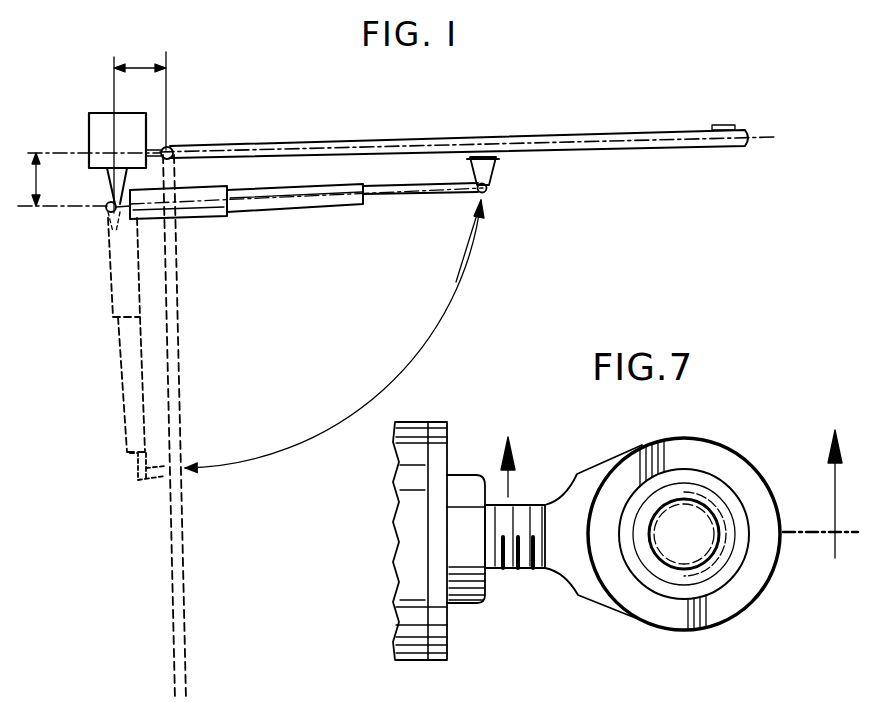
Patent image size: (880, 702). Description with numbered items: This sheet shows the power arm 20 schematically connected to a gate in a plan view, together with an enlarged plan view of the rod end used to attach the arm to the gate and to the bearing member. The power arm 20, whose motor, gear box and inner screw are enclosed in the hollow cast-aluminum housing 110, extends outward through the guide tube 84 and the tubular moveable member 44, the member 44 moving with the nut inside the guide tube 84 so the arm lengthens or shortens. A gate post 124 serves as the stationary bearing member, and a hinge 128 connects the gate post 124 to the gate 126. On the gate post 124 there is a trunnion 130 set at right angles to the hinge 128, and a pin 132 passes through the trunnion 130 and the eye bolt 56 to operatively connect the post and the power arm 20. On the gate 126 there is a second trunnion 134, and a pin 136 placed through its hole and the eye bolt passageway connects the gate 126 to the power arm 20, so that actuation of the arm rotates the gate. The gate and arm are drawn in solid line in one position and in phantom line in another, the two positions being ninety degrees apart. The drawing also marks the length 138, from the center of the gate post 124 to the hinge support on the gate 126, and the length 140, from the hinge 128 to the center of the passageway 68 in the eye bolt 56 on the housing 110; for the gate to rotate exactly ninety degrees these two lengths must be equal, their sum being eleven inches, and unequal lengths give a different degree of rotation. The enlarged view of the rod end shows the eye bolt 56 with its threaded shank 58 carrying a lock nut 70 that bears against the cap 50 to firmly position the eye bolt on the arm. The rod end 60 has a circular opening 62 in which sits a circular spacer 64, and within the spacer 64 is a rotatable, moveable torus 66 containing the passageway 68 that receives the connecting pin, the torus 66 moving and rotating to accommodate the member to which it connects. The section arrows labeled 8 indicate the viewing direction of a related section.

In FIG. 1, the length 138 is at (140, 62).
In FIG. 1, the length 140 is at (36, 182).
In FIG. 1, the gate post 124 is at (130, 128).
In FIG. 1, the hinge 128 is at (169, 147).
In FIG. 1, the trunnion 130 is at (110, 181).
In FIG. 1, the eye bolt 56 is at (108, 211).
In FIG. 7, the eye bolt 56 is at (686, 430).
In FIG. 1, the pin 132 is at (115, 230).
In FIG. 1, the gate 126 is at (443, 135).
In FIG. 1, the trunnion 134 is at (492, 167).
In FIG. 1, the housing 110 is at (196, 218).
In FIG. 1, the power arm 20 is at (266, 214).
In FIG. 1, the guide tube 84 is at (330, 206).
In FIG. 1, the tubular moveable member 44 is at (392, 194).
In FIG. 7, the tubular moveable member 44 is at (413, 435).
In FIG. 1, the pin 136 is at (483, 196).
In FIG. 7, the section line 8 is at (678, 477).
In FIG. 7, the cap 50 is at (450, 455).
In FIG. 7, the lock nut 70 is at (472, 600).
In FIG. 7, the threaded shank 58 is at (513, 572).
In FIG. 7, the rod end 60 is at (733, 478).
In FIG. 7, the circular opening 62 is at (727, 582).
In FIG. 7, the circular spacer 64 is at (660, 586).
In FIG. 7, the torus 66 is at (727, 558).
In FIG. 7, the passageway 68 is at (660, 508).